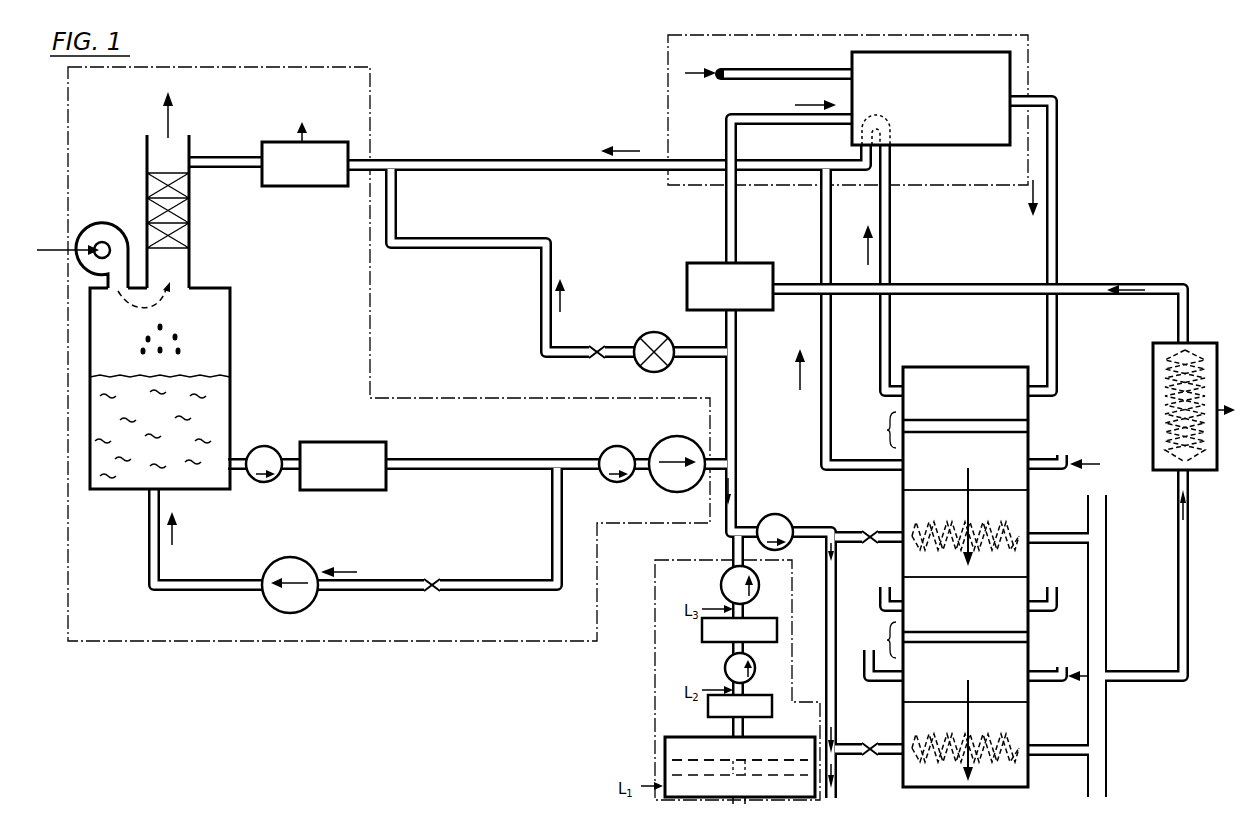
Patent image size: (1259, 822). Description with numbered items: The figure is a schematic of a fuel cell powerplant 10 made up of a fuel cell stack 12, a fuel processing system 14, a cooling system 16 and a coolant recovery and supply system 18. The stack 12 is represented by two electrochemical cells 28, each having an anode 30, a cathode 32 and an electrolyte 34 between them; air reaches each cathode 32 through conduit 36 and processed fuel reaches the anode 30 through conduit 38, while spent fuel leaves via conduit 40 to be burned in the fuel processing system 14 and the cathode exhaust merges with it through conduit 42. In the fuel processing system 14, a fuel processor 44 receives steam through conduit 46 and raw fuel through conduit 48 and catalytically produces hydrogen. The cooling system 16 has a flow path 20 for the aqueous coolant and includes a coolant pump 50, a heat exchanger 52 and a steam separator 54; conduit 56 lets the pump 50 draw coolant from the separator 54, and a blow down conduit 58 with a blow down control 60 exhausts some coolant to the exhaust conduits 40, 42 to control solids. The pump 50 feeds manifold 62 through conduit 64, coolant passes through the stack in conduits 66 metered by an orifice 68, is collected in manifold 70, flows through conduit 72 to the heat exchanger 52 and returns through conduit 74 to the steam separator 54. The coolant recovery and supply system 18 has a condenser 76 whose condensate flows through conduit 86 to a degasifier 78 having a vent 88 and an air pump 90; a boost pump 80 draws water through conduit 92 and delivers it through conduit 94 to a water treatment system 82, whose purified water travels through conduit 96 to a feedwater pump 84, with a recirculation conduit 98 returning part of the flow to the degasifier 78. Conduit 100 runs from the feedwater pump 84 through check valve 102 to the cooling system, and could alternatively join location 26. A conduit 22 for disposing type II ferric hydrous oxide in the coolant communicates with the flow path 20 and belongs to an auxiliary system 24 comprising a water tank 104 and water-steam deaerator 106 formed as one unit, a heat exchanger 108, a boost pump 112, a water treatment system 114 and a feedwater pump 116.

The fuel cell powerplant 10 is at (572, 84).
The fuel cell stack 12 is at (973, 354).
The fuel processing system 14 is at (1042, 52).
The cooling system 16 is at (1184, 278).
The coolant recovery and supply system 18 is at (345, 62).
The flow path 20 is at (741, 486).
The conduit 22 is at (732, 549).
The auxiliary system 24 is at (646, 689).
The location 26 is at (649, 450).
The electrochemical cells 28 is at (882, 535).
The anode 30 is at (965, 499).
The cathode 32 is at (965, 567).
The electrolyte 34 is at (1030, 430).
The conduit 36 is at (1065, 463).
The conduit 38 is at (1060, 378).
The conduit 40 is at (478, 160).
The conduit 42 is at (866, 448).
The fuel processor 44 is at (931, 98).
The conduit 46 is at (738, 231).
The conduit 48 is at (785, 67).
The coolant pump 50 is at (785, 516).
The heat exchanger 52 is at (1217, 348).
The steam separator 54 is at (730, 286).
The conduit 56 is at (738, 427).
The blow down conduit 58 is at (702, 347).
The blow down control 60 is at (653, 332).
The manifold 62 is at (825, 583).
The conduit 64 is at (826, 528).
The conduits 66 is at (870, 544).
The orifice 68 is at (870, 529).
The manifold 70 is at (1108, 600).
The conduit 72 is at (1190, 572).
The conduit 74 is at (1192, 302).
The condenser 76 is at (305, 143).
The degasifier 78 is at (232, 352).
The boost pump 80 is at (271, 446).
The water treatment system 82 is at (343, 466).
The feedwater pump 84 is at (630, 446).
The conduit 86 is at (239, 158).
The vent 88 is at (191, 213).
The air pump 90 is at (116, 226).
The conduit 92 is at (245, 478).
The conduit 94 is at (293, 478).
The conduit 96 is at (507, 459).
The recirculation conduit 98 is at (552, 550).
The conduit 100 is at (641, 478).
The check valve 102 is at (675, 493).
The water tank 104 is at (678, 781).
The water-steam deaerator 106 is at (768, 748).
The heat exchanger 108 is at (740, 706).
The boost pump 112 is at (725, 668).
The water treatment system 114 is at (739, 630).
The feedwater pump 116 is at (721, 586).